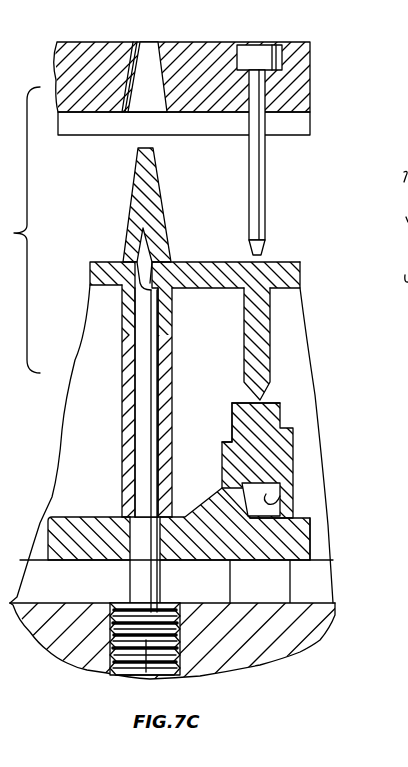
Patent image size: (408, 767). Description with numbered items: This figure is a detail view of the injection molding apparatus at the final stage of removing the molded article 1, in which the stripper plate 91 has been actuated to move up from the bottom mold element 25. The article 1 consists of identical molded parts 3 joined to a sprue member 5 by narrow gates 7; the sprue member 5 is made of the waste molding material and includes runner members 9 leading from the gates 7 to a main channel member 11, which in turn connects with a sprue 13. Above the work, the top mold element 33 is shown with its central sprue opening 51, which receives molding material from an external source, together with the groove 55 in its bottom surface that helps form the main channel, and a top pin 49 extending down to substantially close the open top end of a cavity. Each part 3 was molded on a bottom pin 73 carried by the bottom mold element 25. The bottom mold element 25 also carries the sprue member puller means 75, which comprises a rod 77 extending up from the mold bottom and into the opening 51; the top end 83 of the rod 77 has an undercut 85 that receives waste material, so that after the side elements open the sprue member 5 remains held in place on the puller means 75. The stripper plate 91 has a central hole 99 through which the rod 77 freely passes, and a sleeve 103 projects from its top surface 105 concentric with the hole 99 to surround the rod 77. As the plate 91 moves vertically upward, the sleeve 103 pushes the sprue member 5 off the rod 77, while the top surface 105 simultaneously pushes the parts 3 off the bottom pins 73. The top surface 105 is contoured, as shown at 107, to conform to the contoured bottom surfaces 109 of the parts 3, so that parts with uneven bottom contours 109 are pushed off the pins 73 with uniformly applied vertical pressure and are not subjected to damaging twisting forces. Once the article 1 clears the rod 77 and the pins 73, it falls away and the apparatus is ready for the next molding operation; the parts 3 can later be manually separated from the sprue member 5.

The article 1 is at (181, 160).
The molded part 3 is at (293, 436).
The sprue member 5 is at (173, 249).
The gate 7 is at (262, 403).
The runner member 9 is at (266, 324).
The main channel member 11 is at (280, 262).
The sprue 13 is at (161, 193).
The bottom mold element 25 is at (262, 662).
The top mold element 33 is at (212, 48).
The top pin 49 is at (264, 165).
The central sprue opening 51 is at (149, 33).
The groove 55 is at (300, 116).
The bottom pin 73 is at (288, 584).
The sprue member puller means 75 is at (136, 357).
The rod 77 is at (130, 390).
The top end 83 is at (143, 229).
The undercut 85 is at (176, 302).
The stripper plate 91 is at (312, 519).
The central hole 99 is at (132, 561).
The sleeve 103 is at (170, 425).
The top surface 105 is at (95, 517).
The contour 107 is at (230, 478).
The contoured bottom surface 109 is at (295, 491).